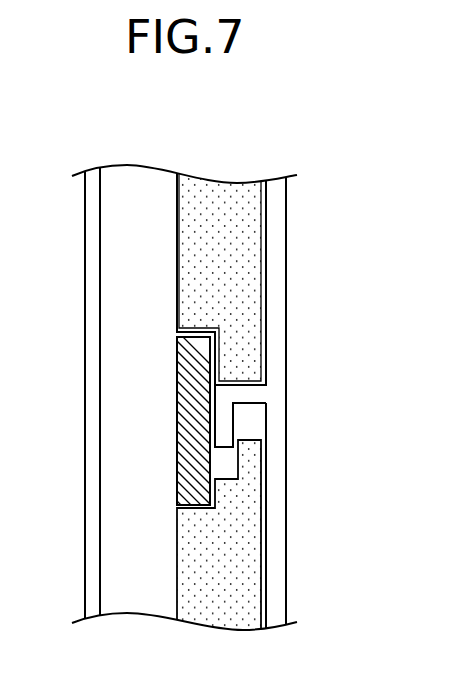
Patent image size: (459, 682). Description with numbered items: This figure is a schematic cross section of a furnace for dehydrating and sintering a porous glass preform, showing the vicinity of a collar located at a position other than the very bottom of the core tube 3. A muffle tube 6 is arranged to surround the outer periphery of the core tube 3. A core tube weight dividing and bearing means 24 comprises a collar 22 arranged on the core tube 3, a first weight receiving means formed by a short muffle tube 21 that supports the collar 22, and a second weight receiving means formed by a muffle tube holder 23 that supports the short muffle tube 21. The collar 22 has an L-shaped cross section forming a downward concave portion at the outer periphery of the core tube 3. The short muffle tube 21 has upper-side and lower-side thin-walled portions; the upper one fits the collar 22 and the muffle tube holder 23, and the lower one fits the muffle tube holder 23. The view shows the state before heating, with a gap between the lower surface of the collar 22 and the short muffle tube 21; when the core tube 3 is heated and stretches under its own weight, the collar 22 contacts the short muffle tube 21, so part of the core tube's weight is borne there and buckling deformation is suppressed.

The core tube 3 is at (278, 202).
The muffle tube 6 is at (92, 403).
The short muffle tube 21 is at (269, 545).
The collar 22 is at (247, 397).
The muffle tube holder 23 is at (200, 458).
The core tube weight dividing and bearing means 24 is at (215, 493).